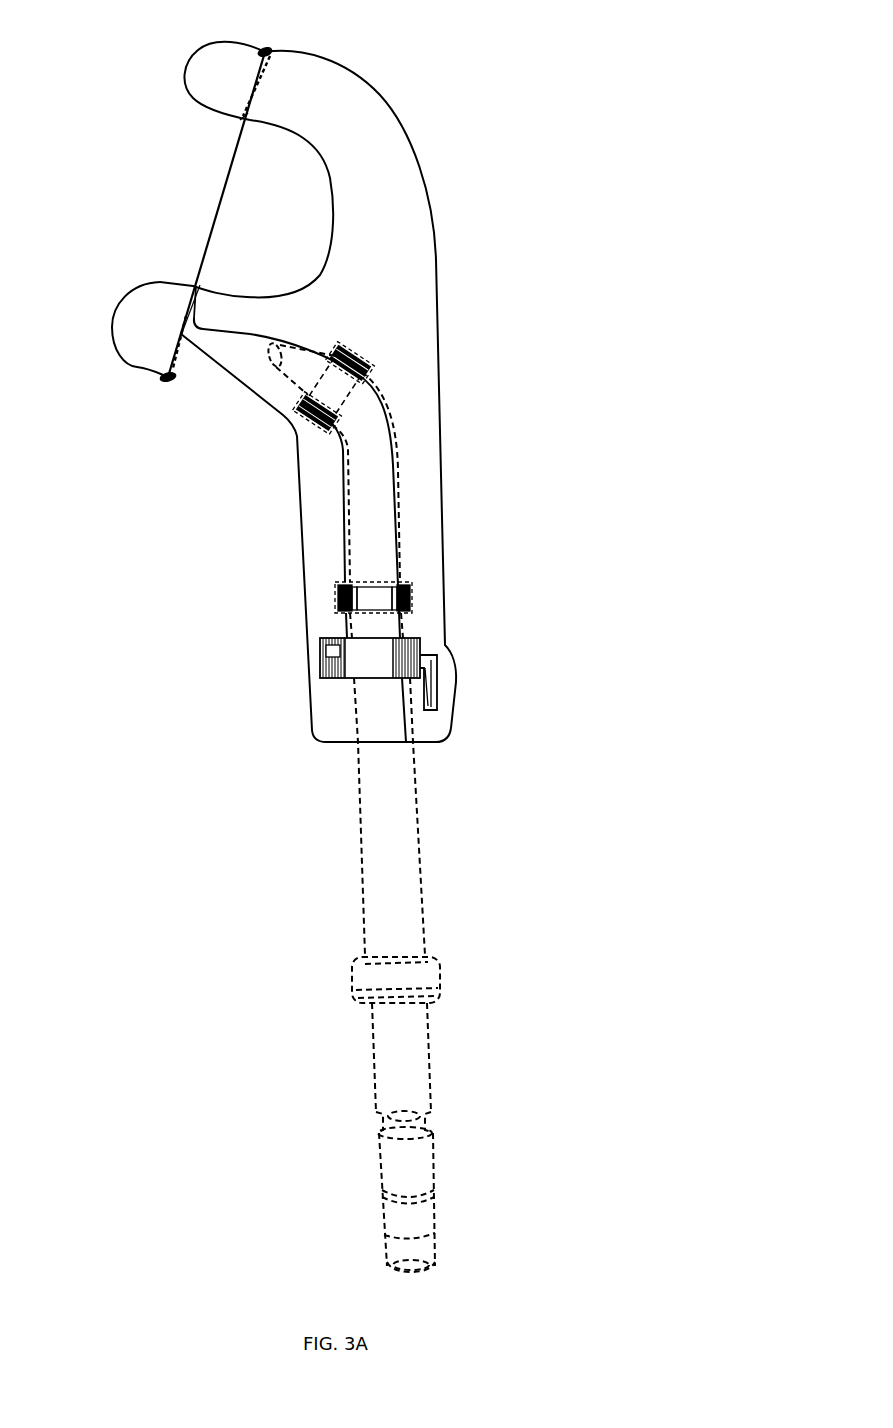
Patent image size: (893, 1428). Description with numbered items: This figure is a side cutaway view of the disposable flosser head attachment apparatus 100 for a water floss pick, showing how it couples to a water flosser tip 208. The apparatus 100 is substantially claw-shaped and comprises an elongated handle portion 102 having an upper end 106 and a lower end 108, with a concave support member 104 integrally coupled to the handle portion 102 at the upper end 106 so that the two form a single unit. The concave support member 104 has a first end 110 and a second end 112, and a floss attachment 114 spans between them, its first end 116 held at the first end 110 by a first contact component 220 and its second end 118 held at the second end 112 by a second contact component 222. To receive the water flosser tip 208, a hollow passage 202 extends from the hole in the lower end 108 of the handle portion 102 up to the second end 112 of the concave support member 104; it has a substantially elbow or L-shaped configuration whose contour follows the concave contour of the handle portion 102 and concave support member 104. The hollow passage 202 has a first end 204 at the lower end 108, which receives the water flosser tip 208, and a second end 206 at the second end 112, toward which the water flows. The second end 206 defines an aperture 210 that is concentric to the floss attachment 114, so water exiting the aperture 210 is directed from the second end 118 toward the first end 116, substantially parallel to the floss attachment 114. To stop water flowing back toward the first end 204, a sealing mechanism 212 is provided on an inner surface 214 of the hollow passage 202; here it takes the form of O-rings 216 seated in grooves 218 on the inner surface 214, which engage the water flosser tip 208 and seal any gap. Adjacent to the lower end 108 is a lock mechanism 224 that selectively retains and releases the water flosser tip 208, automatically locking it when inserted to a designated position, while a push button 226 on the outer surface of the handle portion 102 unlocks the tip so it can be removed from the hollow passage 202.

The disposable flosser head attachment apparatus 100 is at (498, 343).
The handle portion 102 is at (282, 693).
The concave support member 104 is at (344, 69).
The upper end 106 is at (431, 410).
The lower end 108 is at (330, 728).
The first end 110 is at (225, 55).
The second end 112 is at (125, 342).
The floss attachment 114 is at (225, 178).
The first end 116 is at (236, 116).
The second end 118 is at (205, 279).
The hollow passage 202 is at (245, 343).
The first end 204 is at (422, 746).
The second end 206 is at (207, 297).
The water flosser tip 208 is at (407, 870).
The aperture 210 is at (193, 288).
The sealing mechanism 212 is at (334, 599).
The inner surface 214 is at (348, 552).
The O-rings 216 is at (410, 592).
The grooves 218 is at (514, 230).
The first contact component 220 is at (269, 50).
The second contact component 222 is at (167, 379).
The lock mechanism 224 is at (461, 659).
The push button 226 is at (447, 673).